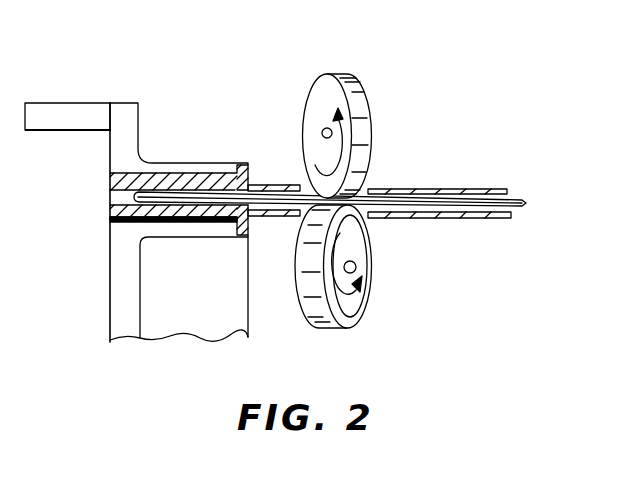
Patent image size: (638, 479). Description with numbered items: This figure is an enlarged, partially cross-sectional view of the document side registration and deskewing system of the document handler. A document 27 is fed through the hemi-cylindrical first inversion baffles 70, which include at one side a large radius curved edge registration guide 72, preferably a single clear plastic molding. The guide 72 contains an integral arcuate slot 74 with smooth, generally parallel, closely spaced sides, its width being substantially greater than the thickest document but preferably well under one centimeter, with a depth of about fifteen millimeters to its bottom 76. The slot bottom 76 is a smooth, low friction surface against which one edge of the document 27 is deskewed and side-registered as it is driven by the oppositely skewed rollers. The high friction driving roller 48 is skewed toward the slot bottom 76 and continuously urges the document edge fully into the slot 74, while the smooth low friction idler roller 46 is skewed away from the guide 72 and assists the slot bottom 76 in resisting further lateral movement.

The document 27 is at (524, 200).
The idler roller 46 is at (348, 77).
The driving roller 48 is at (358, 300).
The first inversion baffles 70 is at (278, 185).
The edge registration guide 72 is at (127, 103).
The arcuate slot 74 is at (225, 192).
The slot bottom 76 is at (147, 205).